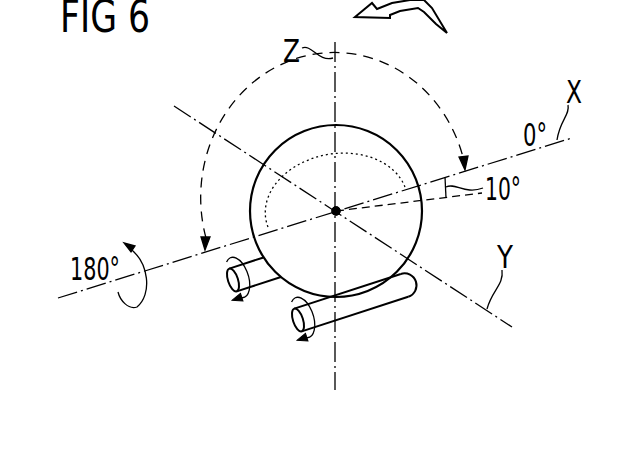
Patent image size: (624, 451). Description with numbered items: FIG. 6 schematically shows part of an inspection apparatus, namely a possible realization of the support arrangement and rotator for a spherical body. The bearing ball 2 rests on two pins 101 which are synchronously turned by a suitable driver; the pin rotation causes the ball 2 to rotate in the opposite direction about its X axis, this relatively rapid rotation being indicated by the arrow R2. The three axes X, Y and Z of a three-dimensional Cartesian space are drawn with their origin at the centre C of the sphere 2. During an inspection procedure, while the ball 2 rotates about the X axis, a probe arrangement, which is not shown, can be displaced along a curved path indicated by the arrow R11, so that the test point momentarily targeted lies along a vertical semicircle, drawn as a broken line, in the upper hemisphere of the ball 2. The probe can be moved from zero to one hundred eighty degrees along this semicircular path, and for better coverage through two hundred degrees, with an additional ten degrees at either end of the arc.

The bearing ball 2 is at (371, 130).
The pins 101 is at (225, 286).
The center of sphere C is at (338, 208).
The arrow R2 is at (137, 308).
The arrow R11 is at (447, 22).